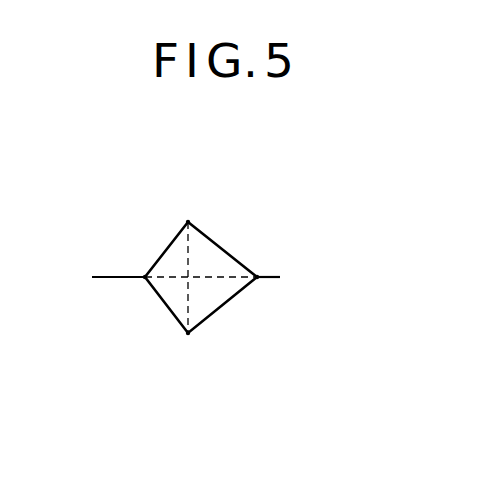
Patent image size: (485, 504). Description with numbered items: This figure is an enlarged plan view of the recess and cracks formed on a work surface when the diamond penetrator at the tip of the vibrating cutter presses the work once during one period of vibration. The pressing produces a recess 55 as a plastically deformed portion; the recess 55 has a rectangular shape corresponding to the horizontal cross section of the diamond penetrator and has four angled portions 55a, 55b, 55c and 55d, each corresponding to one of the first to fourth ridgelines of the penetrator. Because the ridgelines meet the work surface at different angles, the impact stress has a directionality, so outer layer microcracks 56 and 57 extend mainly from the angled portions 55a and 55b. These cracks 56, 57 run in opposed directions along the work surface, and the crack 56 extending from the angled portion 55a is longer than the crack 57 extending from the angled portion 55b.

The recess 55 is at (213, 252).
The angled portion 55a is at (145, 277).
The angled portion 55b is at (258, 276).
The angled portion 55c is at (188, 333).
The angled portion 55d is at (188, 222).
The outer layer microcrack 56 is at (115, 278).
The outer layer microcrack 57 is at (275, 278).